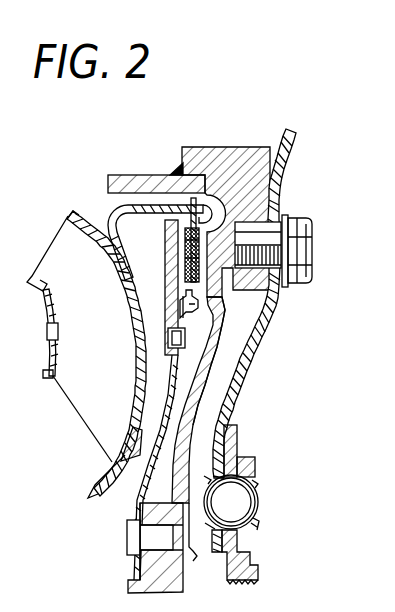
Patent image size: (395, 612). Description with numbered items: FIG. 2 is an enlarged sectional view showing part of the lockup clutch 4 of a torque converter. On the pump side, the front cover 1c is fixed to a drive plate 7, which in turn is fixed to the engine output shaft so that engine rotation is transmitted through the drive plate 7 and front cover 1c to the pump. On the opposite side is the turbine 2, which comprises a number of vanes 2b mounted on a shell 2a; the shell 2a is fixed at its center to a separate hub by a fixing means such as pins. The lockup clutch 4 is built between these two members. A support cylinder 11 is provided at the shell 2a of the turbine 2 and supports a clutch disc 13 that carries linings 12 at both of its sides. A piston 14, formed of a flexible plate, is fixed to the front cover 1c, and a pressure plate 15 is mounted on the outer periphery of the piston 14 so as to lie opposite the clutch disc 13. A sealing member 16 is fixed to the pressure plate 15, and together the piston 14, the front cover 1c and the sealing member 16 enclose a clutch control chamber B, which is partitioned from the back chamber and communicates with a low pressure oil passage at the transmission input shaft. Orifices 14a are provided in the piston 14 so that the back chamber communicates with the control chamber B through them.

The turbine 2 is at (85, 212).
The shell 2a is at (70, 214).
The vanes 2b is at (60, 262).
The lockup clutch 4 is at (217, 203).
The drive plate 7 is at (272, 303).
The support cylinder 11 is at (128, 206).
The linings 12 is at (200, 258).
The clutch disc 13 is at (200, 236).
The piston 14 is at (170, 453).
The orifices 14a is at (202, 395).
The front cover 1c is at (215, 375).
The pressure plate 15 is at (150, 231).
The sealing member 16 is at (210, 318).
The clutch control chamber B is at (232, 442).